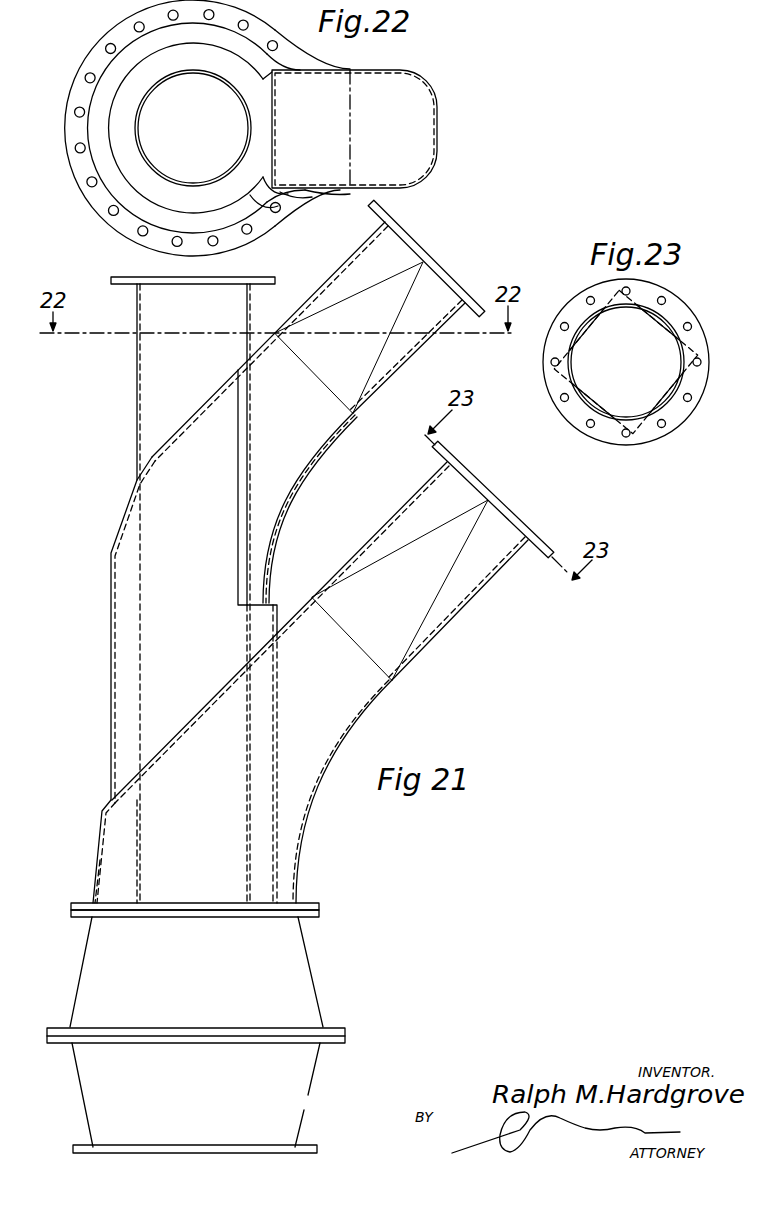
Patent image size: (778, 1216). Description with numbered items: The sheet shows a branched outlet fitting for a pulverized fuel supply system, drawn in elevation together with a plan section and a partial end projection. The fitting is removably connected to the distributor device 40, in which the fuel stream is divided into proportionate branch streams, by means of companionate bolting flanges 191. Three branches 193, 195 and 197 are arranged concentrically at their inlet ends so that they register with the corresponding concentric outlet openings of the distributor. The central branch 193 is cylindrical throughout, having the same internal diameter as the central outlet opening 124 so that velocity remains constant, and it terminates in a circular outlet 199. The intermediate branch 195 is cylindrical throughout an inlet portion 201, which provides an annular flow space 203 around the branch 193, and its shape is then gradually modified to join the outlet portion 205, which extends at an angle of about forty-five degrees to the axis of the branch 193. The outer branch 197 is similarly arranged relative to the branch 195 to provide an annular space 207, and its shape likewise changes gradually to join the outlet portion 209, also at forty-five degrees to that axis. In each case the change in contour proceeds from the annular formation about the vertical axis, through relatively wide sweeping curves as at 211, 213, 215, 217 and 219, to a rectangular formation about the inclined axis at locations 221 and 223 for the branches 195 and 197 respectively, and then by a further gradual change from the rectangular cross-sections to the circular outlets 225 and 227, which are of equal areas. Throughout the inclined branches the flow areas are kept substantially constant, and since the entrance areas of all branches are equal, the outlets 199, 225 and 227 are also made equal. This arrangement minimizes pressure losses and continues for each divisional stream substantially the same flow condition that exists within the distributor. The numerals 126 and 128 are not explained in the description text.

In FIG. 21, the distributor device 40 is at (318, 990).
In FIG. 21, the central outlet opening 124 is at (212, 903).
In FIG. 21, the inner wall 126 is at (127, 876).
In FIG. 21, the outer wall 128 is at (95, 890).
In FIG. 22, the companionate bolting flanges 191 is at (68, 120).
In FIG. 21, the companionate bolting flanges 191 is at (319, 906).
In FIG. 22, the branch 193 is at (160, 180).
In FIG. 21, the branch 193 is at (135, 404).
In FIG. 22, the branch 195 is at (125, 178).
In FIG. 21, the branch 195 is at (328, 444).
In FIG. 22, the branch 197 is at (95, 163).
In FIG. 21, the branch 197 is at (365, 716).
In FIG. 21, the circular outlet 199 is at (217, 277).
In FIG. 21, the inlet portion 201 is at (110, 706).
In FIG. 21, the annular flow space 203 is at (125, 658).
In FIG. 21, the outlet portion 205 is at (413, 368).
In FIG. 21, the annular space 207 is at (110, 843).
In FIG. 21, the outlet portion 209 is at (452, 625).
In FIG. 22, the sweeping curve 211 is at (257, 203).
In FIG. 22, the sweeping curve 213 is at (290, 199).
In FIG. 22, the sweeping curve 215 is at (320, 196).
In FIG. 21, the sweeping curve 217 is at (300, 497).
In FIG. 21, the sweeping curve 219 is at (318, 797).
In FIG. 22, the rectangular formation location 221 is at (275, 135).
In FIG. 21, the rectangular formation location 221 is at (355, 414).
In FIG. 23, the rectangular formation location 223 is at (587, 388).
In FIG. 21, the rectangular formation location 223 is at (397, 680).
In FIG. 21, the circular outlet 225 is at (415, 241).
In FIG. 23, the circular outlet 227 is at (646, 414).
In FIG. 21, the circular outlet 227 is at (480, 477).